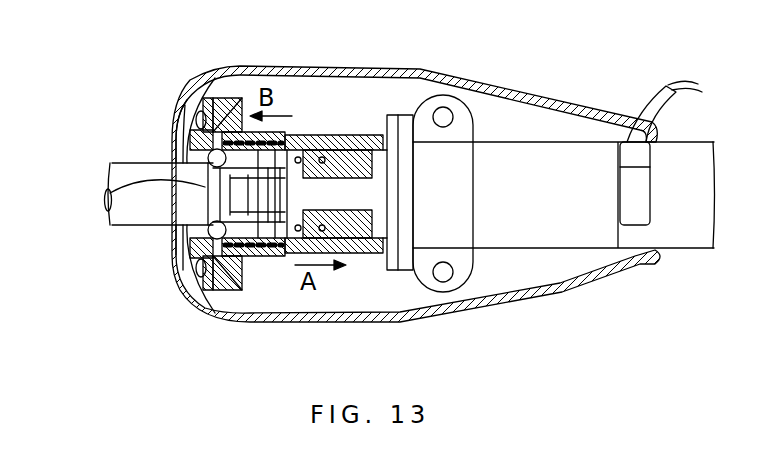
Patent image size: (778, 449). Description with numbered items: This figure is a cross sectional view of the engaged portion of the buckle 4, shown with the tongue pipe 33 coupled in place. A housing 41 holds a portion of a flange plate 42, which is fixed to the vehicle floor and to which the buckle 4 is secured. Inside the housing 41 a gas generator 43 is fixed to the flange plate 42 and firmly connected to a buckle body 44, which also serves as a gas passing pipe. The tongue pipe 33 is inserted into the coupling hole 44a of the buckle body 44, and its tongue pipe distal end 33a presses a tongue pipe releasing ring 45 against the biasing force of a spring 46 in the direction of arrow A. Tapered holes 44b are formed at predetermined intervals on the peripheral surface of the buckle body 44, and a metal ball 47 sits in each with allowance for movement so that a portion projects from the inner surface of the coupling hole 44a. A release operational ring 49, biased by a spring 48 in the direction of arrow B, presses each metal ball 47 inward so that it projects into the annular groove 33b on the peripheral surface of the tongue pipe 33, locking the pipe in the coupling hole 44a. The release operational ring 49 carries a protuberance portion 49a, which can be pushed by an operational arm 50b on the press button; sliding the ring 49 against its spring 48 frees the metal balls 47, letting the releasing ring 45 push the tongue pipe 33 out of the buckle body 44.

The buckle 4 is at (465, 314).
The tongue pipe 33 is at (126, 226).
The tongue pipe distal end 33a is at (262, 260).
The annular groove 33b is at (110, 196).
The housing 41 is at (522, 70).
The flange plate 42 is at (690, 250).
The gas generator 43 is at (567, 245).
The buckle body 44 is at (399, 112).
The coupling hole 44a is at (357, 136).
The tapered holes 44b is at (212, 290).
The tongue pipe releasing ring 45 is at (283, 135).
The spring 46 is at (303, 258).
The metal ball 47 is at (205, 154).
The spring 48 is at (242, 72).
The release operational ring 49 is at (168, 116).
The protuberance portion 49a is at (208, 300).
The operational arm 50b is at (180, 296).